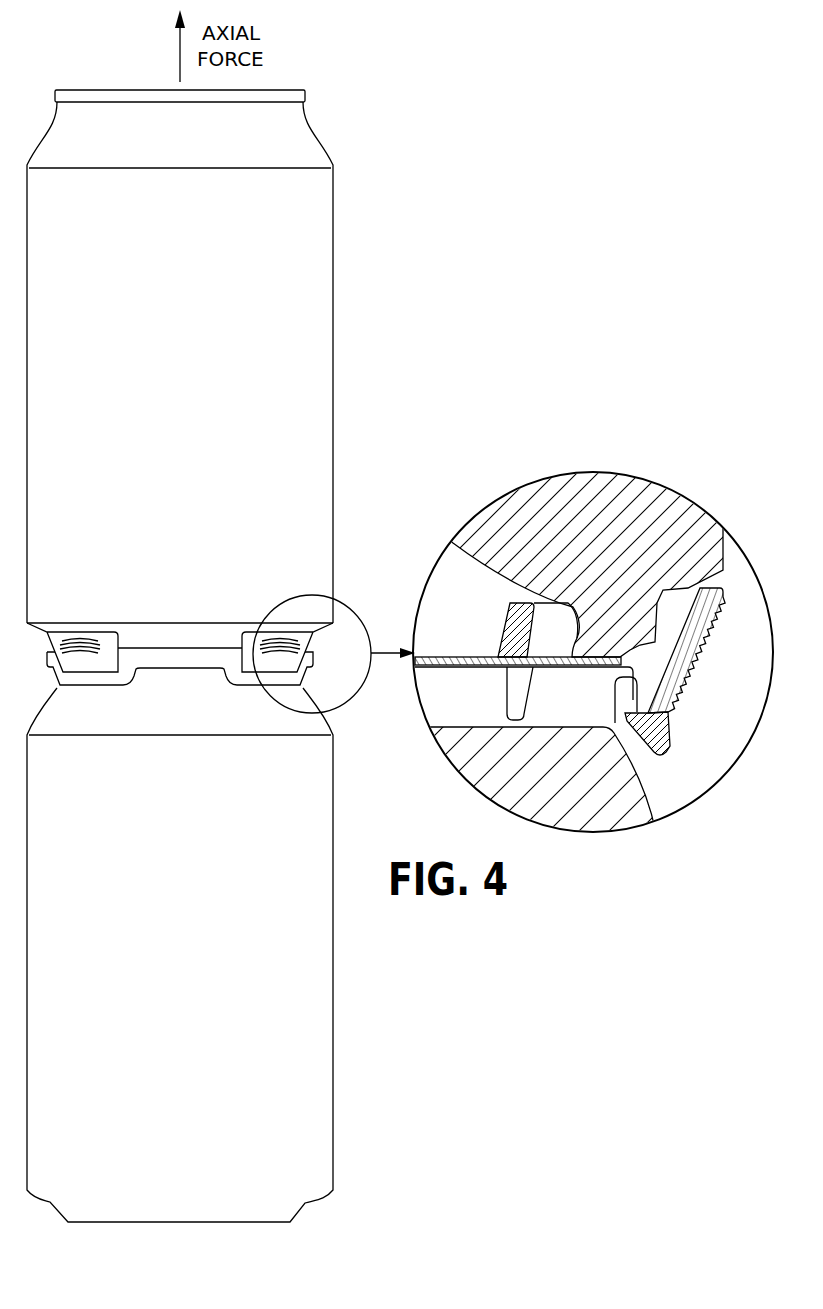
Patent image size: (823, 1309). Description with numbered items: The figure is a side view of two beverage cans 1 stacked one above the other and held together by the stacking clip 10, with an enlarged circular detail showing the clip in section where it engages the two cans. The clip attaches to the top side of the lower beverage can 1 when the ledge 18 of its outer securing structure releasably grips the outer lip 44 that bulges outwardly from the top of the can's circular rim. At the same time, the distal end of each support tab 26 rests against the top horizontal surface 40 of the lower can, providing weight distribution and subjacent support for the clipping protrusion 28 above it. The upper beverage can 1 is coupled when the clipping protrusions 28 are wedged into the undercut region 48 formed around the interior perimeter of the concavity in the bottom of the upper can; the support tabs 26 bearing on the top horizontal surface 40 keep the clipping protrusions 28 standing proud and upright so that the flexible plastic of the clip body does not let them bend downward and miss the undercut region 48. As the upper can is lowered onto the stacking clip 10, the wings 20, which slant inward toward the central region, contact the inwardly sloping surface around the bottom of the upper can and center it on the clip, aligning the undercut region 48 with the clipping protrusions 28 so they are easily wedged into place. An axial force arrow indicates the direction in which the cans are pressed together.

The beverage can 1 is at (333, 400).
The stacking clip 10 is at (183, 648).
The top horizontal surface 40 is at (450, 727).
The undercut region 48 is at (572, 645).
The clipping protrusion 28 is at (534, 600).
The support tab 26 is at (507, 692).
The ledge 18 is at (625, 703).
The wing 20 is at (698, 657).
The outer lip 44 is at (652, 701).